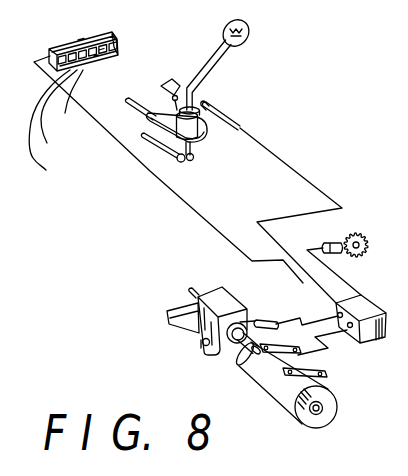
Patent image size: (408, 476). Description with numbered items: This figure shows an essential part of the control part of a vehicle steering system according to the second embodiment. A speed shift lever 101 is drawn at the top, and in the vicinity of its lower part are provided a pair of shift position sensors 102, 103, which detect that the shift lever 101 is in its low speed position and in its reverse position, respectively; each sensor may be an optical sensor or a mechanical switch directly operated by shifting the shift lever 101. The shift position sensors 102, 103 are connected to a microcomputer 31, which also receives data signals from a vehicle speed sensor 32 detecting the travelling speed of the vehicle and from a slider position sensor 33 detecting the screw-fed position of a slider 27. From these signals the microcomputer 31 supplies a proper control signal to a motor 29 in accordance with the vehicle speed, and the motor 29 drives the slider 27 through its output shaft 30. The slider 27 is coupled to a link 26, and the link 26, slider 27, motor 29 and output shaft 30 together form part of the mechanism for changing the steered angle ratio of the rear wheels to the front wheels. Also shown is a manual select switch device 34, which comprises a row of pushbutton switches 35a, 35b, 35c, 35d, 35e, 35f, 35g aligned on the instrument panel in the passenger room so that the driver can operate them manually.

The manual select switch device 34 is at (116, 30).
The pushbutton switch 35a is at (120, 53).
The pushbutton switch 35b is at (102, 57).
The pushbutton switch 35c is at (98, 62).
The pushbutton switch 35d is at (78, 39).
The pushbutton switch 35e is at (69, 104).
The pushbutton switch 35f is at (63, 116).
The pushbutton switch 35g is at (54, 129).
The speed shift lever 101 is at (222, 63).
The shift position sensor 102 is at (172, 85).
The shift position sensor 103 is at (207, 112).
The vehicle speed sensor 32 is at (340, 240).
The microcomputer 31 is at (374, 304).
The slider 27 is at (228, 302).
The slider position sensor 33 is at (266, 320).
The link 26 is at (189, 336).
The output shaft 30 is at (240, 356).
The motor 29 is at (271, 388).